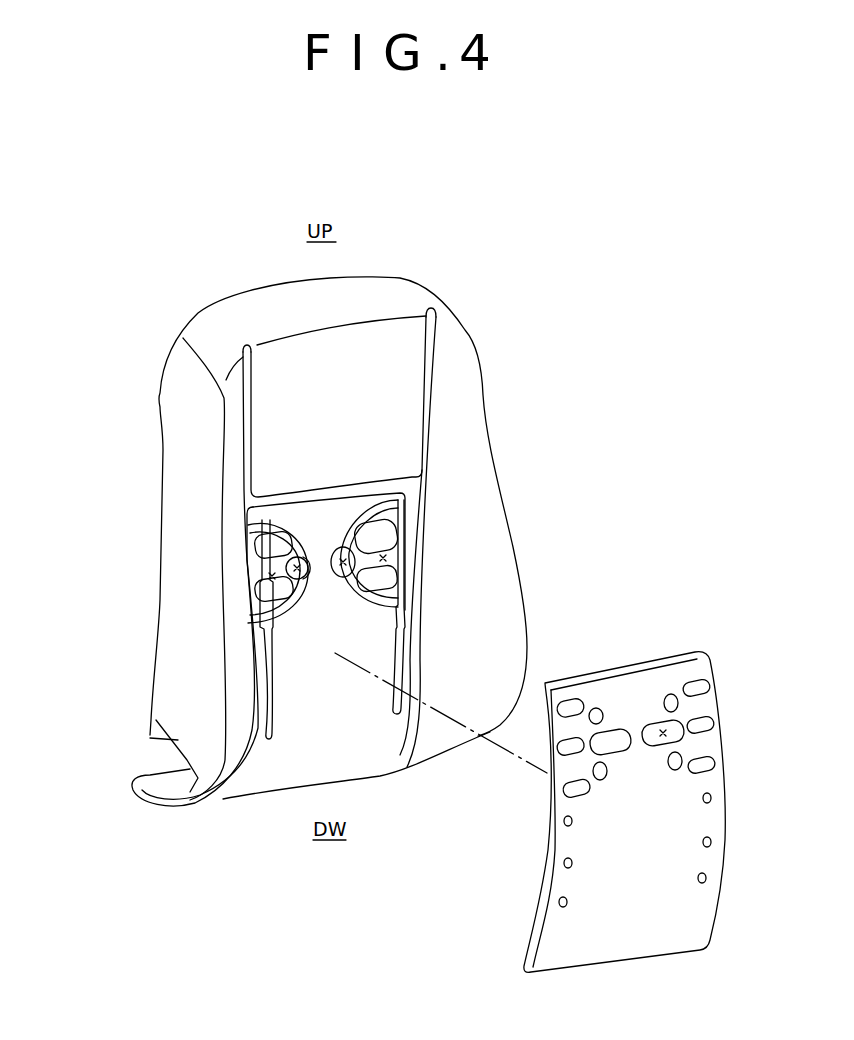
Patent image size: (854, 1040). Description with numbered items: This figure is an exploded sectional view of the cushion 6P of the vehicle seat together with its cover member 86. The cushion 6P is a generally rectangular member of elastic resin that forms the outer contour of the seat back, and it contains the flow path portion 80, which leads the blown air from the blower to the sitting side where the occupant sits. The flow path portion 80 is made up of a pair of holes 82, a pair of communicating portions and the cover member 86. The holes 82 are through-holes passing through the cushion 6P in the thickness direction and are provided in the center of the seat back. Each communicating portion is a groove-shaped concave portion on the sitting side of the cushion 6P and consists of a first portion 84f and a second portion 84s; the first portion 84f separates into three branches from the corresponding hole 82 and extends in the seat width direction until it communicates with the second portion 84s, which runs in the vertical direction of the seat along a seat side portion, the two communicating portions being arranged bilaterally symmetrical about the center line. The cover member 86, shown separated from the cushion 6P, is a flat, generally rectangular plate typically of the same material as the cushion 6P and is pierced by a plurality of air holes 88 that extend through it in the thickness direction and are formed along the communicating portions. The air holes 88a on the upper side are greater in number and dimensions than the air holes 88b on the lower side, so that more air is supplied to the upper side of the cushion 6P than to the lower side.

The cushion 6P is at (427, 294).
The flow path portion 80 is at (588, 487).
The holes 82 is at (263, 529).
The first portion 84f is at (272, 576).
The second portion 84s is at (270, 650).
The cover member 86 is at (576, 777).
The air holes 88 is at (571, 765).
The air holes on the upper side 88a is at (663, 728).
The air holes on the lower side 88b is at (565, 861).